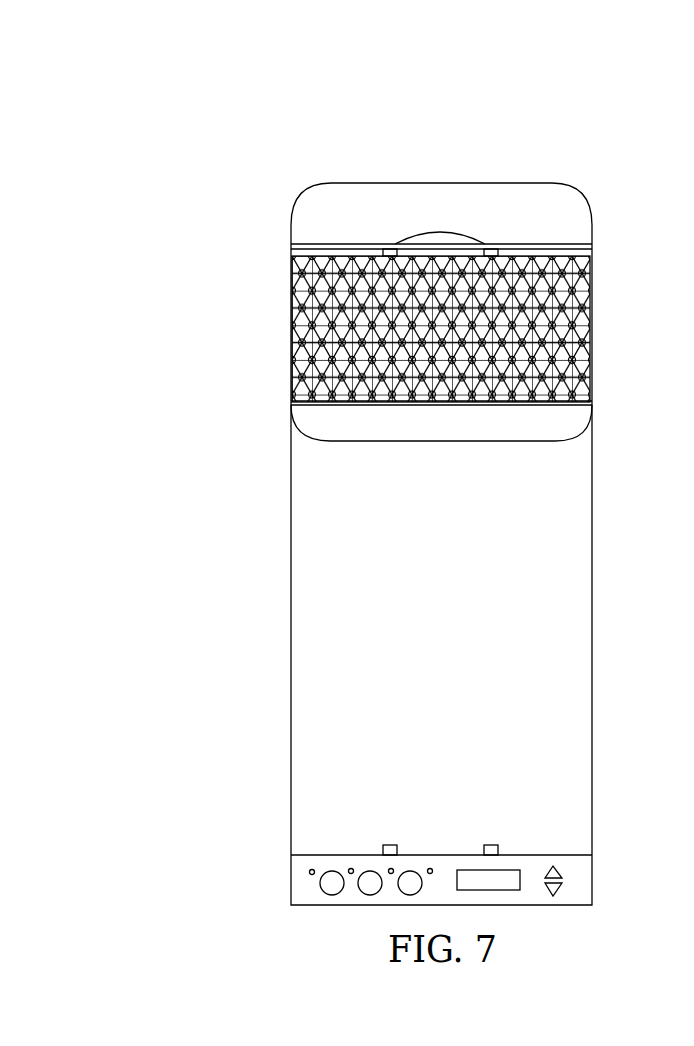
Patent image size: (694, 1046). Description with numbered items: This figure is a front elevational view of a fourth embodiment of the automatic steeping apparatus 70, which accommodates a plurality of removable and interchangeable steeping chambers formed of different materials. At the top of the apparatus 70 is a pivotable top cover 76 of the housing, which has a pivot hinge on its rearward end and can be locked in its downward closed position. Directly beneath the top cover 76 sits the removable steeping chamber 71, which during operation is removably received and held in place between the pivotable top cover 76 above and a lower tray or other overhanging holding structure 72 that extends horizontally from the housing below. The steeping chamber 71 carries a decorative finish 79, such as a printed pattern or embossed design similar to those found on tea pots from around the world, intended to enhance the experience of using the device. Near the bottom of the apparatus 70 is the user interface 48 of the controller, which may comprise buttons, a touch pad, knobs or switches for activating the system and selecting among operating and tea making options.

The automatic steeping apparatus 70 is at (334, 121).
The pivotable top cover 76 is at (490, 180).
The decorative finish 79 is at (298, 306).
The removable steeping chamber 71 is at (288, 360).
The lower tray or overhanging holding structure 72 is at (417, 445).
The user interface 48 is at (416, 872).